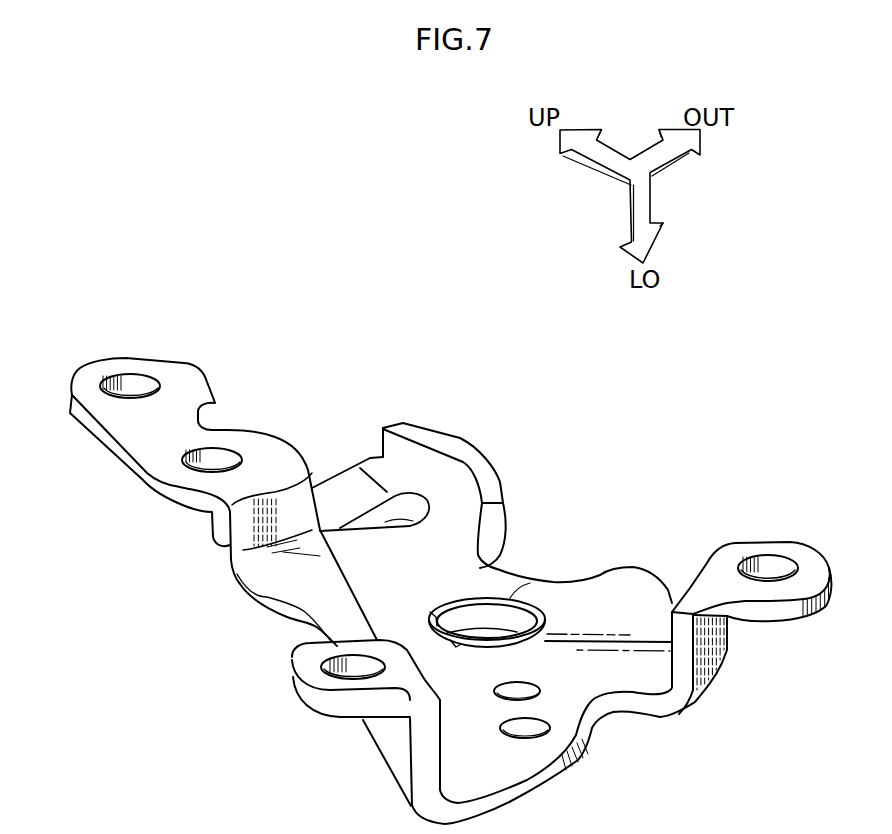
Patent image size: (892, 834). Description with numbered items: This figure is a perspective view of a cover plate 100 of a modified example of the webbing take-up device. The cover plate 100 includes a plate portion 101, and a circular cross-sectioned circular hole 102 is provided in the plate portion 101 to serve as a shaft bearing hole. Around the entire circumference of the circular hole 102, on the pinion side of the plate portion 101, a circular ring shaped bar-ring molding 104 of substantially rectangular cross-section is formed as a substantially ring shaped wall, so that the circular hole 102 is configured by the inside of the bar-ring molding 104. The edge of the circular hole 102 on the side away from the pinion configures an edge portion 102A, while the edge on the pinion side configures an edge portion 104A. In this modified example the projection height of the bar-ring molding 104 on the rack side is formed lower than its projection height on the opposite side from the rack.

The cover plate 100 is at (450, 591).
The plate portion 101 is at (583, 672).
The circular hole 102 is at (493, 623).
The edge portion 102A is at (463, 637).
The bar-ring molding 104 is at (510, 598).
The edge portion 104A is at (594, 567).